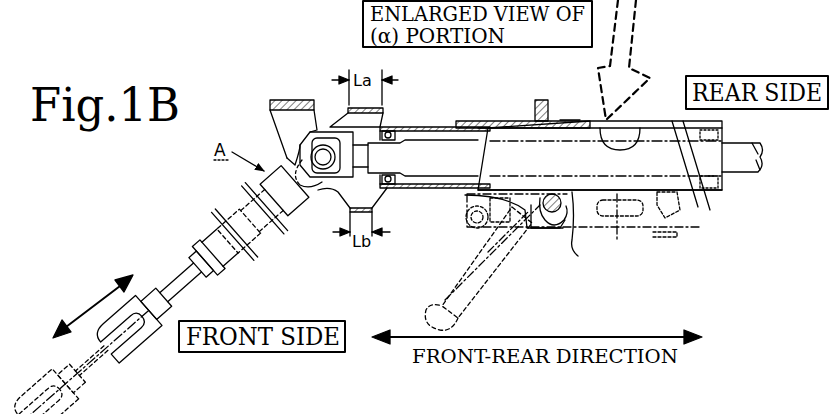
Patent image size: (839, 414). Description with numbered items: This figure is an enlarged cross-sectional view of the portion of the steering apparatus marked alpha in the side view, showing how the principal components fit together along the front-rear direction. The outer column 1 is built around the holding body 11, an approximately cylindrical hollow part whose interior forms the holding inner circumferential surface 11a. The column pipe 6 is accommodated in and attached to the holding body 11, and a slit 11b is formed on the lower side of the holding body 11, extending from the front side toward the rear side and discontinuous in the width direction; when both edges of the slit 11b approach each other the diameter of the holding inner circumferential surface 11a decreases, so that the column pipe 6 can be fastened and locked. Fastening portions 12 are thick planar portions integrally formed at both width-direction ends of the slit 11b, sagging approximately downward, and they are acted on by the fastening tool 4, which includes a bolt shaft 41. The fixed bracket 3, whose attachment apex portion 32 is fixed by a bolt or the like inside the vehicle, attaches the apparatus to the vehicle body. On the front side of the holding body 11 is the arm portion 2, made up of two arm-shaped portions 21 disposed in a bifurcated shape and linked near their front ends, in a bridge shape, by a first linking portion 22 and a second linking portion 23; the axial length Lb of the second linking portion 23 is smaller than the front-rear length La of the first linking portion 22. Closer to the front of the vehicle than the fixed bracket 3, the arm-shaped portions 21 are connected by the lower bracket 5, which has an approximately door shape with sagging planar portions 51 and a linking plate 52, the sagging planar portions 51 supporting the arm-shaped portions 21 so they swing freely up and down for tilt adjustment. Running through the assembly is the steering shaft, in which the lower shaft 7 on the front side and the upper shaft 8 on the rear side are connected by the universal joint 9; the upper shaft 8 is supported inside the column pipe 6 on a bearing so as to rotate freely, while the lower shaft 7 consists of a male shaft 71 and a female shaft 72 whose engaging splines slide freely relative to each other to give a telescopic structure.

The outer column 1 is at (571, 120).
The arm portion 2 is at (388, 194).
The fixed bracket 3 is at (615, 236).
The fastening tool 4 is at (497, 268).
The lower bracket 5 is at (282, 100).
The column pipe 6 is at (690, 203).
The lower shaft 7 is at (273, 230).
The upper shaft 8 is at (444, 150).
The universal joint 9 is at (330, 130).
The holding body 11 is at (490, 122).
The holding inner circumferential surface 11a is at (622, 128).
The slit 11b is at (580, 193).
The fastening portion 12 is at (562, 214).
The arm-shaped portion 21 is at (308, 182).
The first linking portion 22 is at (364, 108).
The second linking portion 23 is at (378, 193).
The attachment apex portion 32 is at (542, 100).
The bolt shaft 41 is at (547, 200).
The sagging planar portion 51 is at (270, 130).
The linking plate 52 is at (298, 100).
The male shaft 71 is at (115, 307).
The female shaft 72 is at (214, 216).